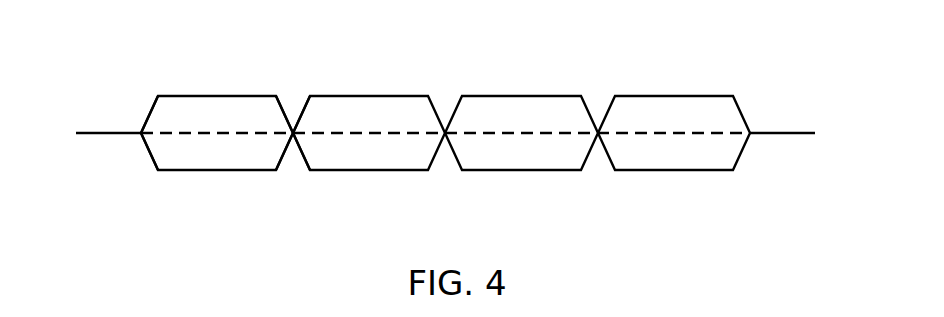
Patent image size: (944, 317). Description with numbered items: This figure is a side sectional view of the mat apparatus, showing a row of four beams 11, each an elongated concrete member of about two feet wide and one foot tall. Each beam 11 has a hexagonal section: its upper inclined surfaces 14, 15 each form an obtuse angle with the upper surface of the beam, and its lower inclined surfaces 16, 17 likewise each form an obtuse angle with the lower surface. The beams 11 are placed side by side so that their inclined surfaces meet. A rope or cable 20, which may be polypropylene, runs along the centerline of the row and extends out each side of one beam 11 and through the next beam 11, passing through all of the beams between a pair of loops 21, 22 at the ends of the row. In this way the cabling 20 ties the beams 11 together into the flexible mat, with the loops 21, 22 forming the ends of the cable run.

The beam 11 is at (228, 95).
The surface 14 is at (152, 104).
The surface 15 is at (285, 98).
The surface 16 is at (278, 168).
The surface 17 is at (155, 171).
The cable 20 is at (712, 133).
The loop 21 is at (108, 133).
The loop 22 is at (793, 133).